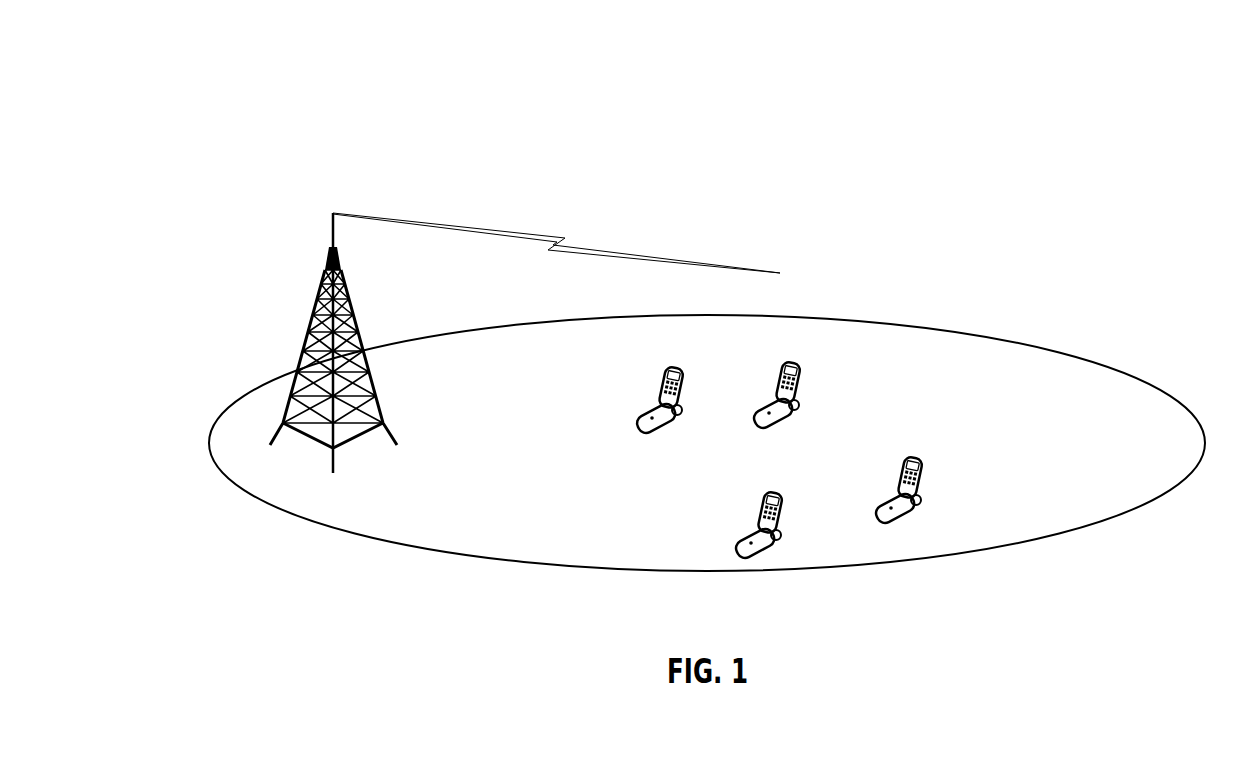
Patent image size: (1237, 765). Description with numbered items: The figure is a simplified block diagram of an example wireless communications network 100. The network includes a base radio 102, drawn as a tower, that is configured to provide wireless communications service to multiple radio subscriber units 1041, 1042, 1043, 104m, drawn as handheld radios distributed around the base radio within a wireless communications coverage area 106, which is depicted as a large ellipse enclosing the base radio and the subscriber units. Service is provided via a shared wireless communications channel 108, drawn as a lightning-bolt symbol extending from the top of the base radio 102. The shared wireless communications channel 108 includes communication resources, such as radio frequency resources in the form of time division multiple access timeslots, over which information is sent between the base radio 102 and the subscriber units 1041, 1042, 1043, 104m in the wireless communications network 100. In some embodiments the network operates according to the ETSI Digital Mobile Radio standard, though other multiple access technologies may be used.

The wireless communications network 100 is at (870, 134).
The base radio 102 is at (318, 298).
The radio subscriber unit 1041 is at (675, 367).
The radio subscriber unit 1042 is at (792, 364).
The radio subscriber unit 1043 is at (774, 493).
The radio subscriber unit 104m is at (913, 459).
The wireless communications coverage area 106 is at (928, 327).
The shared wireless communications channel 108 is at (502, 235).